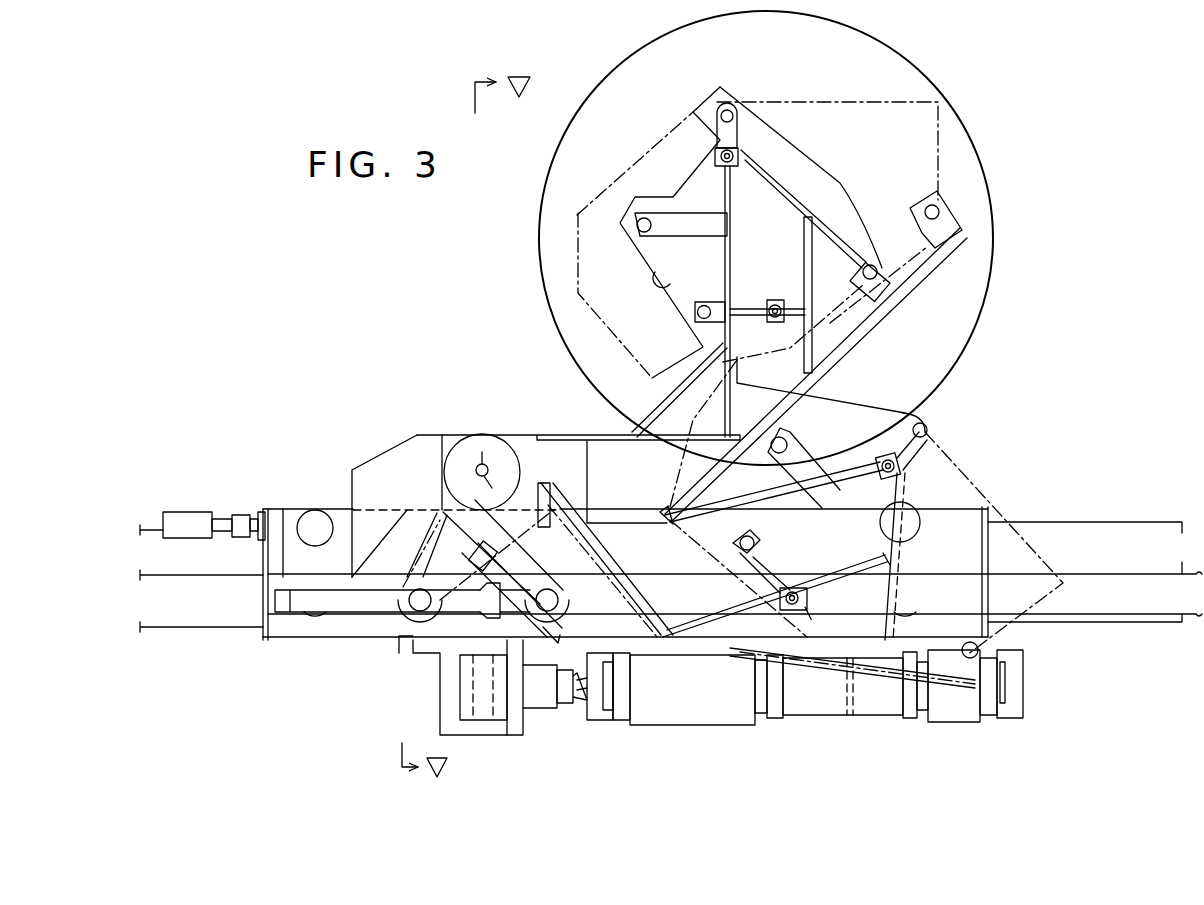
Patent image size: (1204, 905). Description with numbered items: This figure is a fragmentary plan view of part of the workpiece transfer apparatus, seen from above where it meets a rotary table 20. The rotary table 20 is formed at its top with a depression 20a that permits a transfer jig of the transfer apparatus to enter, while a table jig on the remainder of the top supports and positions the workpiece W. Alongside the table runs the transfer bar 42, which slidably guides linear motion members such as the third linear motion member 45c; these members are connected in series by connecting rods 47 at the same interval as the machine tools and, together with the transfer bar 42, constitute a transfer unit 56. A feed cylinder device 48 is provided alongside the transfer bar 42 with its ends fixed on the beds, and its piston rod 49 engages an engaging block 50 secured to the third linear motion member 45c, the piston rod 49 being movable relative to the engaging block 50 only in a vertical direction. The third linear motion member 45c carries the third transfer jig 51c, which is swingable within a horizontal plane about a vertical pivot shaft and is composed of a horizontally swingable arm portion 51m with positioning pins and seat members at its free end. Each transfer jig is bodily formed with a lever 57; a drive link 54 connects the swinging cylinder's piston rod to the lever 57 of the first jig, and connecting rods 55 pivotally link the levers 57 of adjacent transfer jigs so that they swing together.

The workpiece W is at (917, 110).
The rotary table 20 is at (985, 193).
The depression 20a is at (665, 275).
The transfer bar 42 is at (1088, 522).
The third linear motion member 45c is at (963, 513).
The connecting rod 47 is at (193, 516).
The feed cylinder device 48 is at (818, 717).
The piston rod 49 is at (600, 697).
The engaging block 50 is at (490, 735).
The third transfer jig 51c is at (920, 290).
The arm portion 51m is at (592, 437).
The drive link 54 is at (718, 613).
The connecting rod 55 is at (290, 608).
The transfer unit 56 is at (1083, 450).
The lever 57 is at (510, 552).